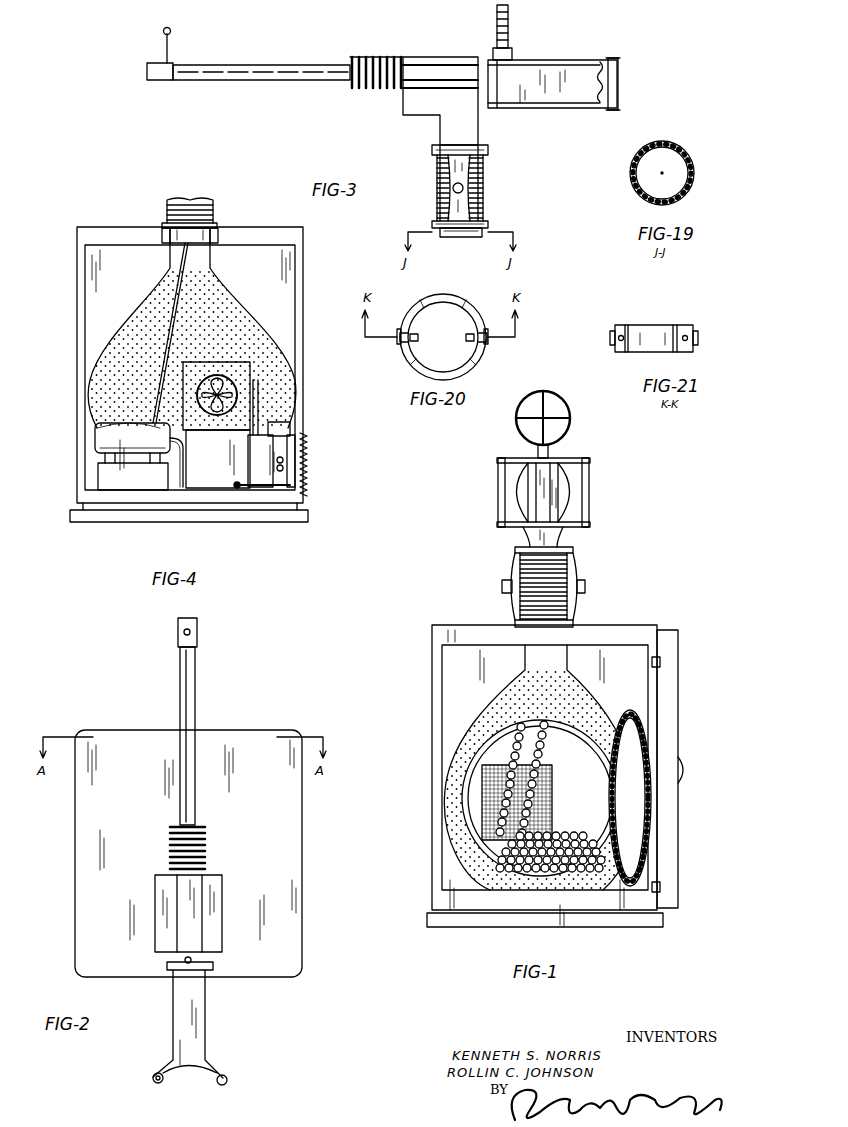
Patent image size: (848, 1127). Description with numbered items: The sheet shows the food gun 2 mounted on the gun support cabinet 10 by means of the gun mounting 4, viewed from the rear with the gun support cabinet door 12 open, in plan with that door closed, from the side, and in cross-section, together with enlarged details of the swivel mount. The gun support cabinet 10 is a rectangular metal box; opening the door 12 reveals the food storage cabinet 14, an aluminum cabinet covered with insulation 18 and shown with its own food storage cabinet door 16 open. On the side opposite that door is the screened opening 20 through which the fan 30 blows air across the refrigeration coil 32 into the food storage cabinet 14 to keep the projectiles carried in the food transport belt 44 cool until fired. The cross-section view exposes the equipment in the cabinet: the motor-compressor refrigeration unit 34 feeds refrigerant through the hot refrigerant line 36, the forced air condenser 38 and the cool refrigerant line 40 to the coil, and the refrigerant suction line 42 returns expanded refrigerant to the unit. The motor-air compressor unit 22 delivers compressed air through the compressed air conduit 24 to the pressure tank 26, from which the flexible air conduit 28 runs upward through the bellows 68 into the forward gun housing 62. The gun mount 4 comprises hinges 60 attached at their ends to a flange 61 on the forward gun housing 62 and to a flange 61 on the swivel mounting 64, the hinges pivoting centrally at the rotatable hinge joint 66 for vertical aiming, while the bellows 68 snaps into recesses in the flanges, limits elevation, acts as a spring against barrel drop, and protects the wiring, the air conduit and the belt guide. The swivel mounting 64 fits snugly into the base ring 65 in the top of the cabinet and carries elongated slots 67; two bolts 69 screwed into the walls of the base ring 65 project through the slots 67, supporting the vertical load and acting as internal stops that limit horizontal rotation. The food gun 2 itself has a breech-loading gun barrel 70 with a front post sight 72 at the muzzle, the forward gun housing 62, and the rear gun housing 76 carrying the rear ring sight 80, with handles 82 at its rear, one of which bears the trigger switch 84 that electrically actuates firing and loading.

In FIG. 3, the food gun 2 is at (388, 99).
In FIG. 2, the food gun 2 is at (146, 916).
In FIG. 1, the food gun 2 is at (596, 506).
In FIG. 3, the gun mounting 4 is at (493, 203).
In FIG. 1, the gun mounting 4 is at (501, 615).
In FIG. 4, the gun support cabinet 10 is at (301, 345).
In FIG. 2, the gun support cabinet 10 is at (88, 825).
In FIG. 1, the gun support cabinet 10 is at (545, 776).
In FIG. 1, the gun support cabinet door 12 is at (680, 722).
In FIG. 1, the food storage cabinet 14 is at (462, 832).
In FIG. 1, the food storage cabinet door 16 is at (640, 868).
In FIG. 4, the insulation 18 is at (258, 332).
In FIG. 1, the insulation 18 is at (443, 815).
In FIG. 1, the screened opening 20 is at (488, 780).
In FIG. 4, the motor-air compressor unit 22 is at (110, 477).
In FIG. 4, the compressed air conduit 24 is at (183, 488).
In FIG. 4, the pressure tank 26 is at (105, 440).
In FIG. 4, the flexible air conduit 28 is at (118, 372).
In FIG. 4, the fan 30 is at (232, 385).
In FIG. 4, the refrigeration coil 32 is at (190, 372).
In FIG. 4, the motor-compressor refrigeration unit 34 is at (265, 478).
In FIG. 4, the hot refrigerant line 36 is at (290, 421).
In FIG. 4, the forced air condenser 38 is at (300, 462).
In FIG. 4, the cool refrigerant line 40 is at (258, 488).
In FIG. 4, the refrigerant suction line 42 is at (262, 402).
In FIG. 1, the food transport belt 44 is at (620, 875).
In FIG. 3, the hinges 60 is at (480, 166).
In FIG. 1, the hinges 60 is at (577, 566).
In FIG. 3, the flange 61 is at (487, 150).
In FIG. 4, the flange 61 is at (216, 225).
In FIG. 1, the flange 61 is at (569, 549).
In FIG. 3, the forward gun housing 62 is at (417, 60).
In FIG. 2, the forward gun housing 62 is at (222, 908).
In FIG. 1, the forward gun housing 62 is at (530, 536).
In FIG. 3, the swivel mounting 64 is at (485, 233).
In FIG. 19, the swivel mounting 64 is at (695, 178).
In FIG. 20, the base ring 65 is at (455, 299).
In FIG. 21, the base ring 65 is at (693, 330).
In FIG. 4, the base ring 65 is at (175, 228).
In FIG. 3, the rotatable hinge joint 66 is at (475, 186).
In FIG. 1, the rotatable hinge joint 66 is at (586, 586).
In FIG. 3, the elongated slots 67 is at (460, 236).
In FIG. 19, the elongated slots 67 is at (672, 146).
In FIG. 3, the bellows 68 is at (440, 168).
In FIG. 4, the bellows 68 is at (212, 201).
In FIG. 1, the bellows 68 is at (530, 571).
In FIG. 20, the bolts 69 is at (397, 340).
In FIG. 21, the bolts 69 is at (610, 340).
In FIG. 4, the bolts 69 is at (222, 237).
In FIG. 3, the gun barrel 70 is at (285, 66).
In FIG. 2, the gun barrel 70 is at (197, 678).
In FIG. 3, the front post sight 72 is at (174, 47).
In FIG. 2, the front post sight 72 is at (199, 634).
In FIG. 3, the rear gun housing 76 is at (565, 62).
In FIG. 2, the rear gun housing 76 is at (205, 1046).
In FIG. 1, the rear gun housing 76 is at (549, 470).
In FIG. 3, the rear ring sight 80 is at (513, 43).
In FIG. 2, the rear ring sight 80 is at (167, 970).
In FIG. 1, the rear ring sight 80 is at (570, 412).
In FIG. 3, the handles 82 is at (619, 82).
In FIG. 2, the handles 82 is at (153, 1078).
In FIG. 1, the handles 82 is at (500, 473).
In FIG. 3, the trigger switch 84 is at (613, 55).
In FIG. 2, the trigger switch 84 is at (160, 1084).
In FIG. 1, the trigger switch 84 is at (500, 458).